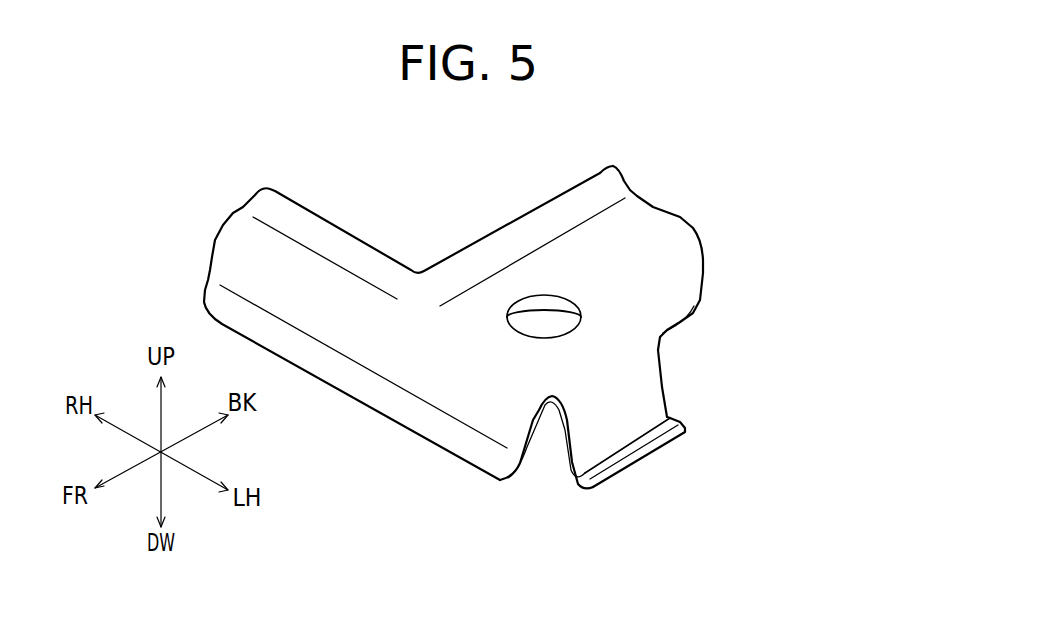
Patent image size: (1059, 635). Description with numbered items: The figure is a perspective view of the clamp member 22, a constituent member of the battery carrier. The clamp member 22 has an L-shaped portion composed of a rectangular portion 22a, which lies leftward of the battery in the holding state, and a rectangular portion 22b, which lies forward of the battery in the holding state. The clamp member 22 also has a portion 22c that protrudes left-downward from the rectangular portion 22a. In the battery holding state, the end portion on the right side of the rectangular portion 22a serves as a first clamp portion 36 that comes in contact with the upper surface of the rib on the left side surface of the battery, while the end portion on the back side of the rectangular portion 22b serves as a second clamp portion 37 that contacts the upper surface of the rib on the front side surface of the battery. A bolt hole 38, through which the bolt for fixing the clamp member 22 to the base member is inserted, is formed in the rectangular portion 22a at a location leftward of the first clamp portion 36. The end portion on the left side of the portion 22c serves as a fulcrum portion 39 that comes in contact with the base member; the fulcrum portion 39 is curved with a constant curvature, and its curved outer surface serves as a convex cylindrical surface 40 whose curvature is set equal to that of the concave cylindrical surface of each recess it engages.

The clamp member 22 is at (695, 205).
The rectangular portion 22a is at (613, 260).
The rectangular portion 22b is at (355, 322).
The protruding portion 22c is at (647, 392).
The first clamp portion 36 is at (542, 220).
The second clamp portion 37 is at (340, 247).
The bolt hole 38 is at (552, 306).
The fulcrum portion 39 is at (572, 483).
The convex cylindrical surface 40 is at (657, 452).